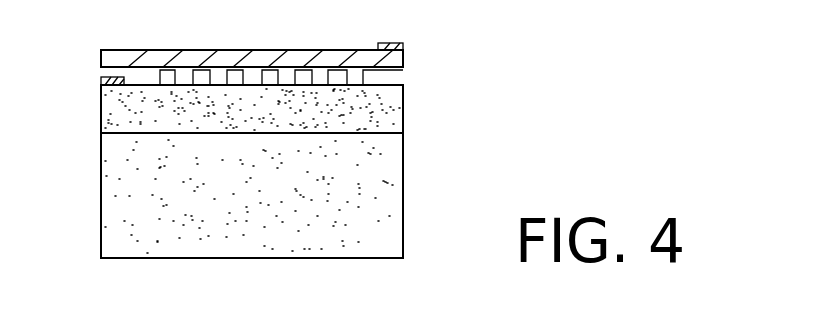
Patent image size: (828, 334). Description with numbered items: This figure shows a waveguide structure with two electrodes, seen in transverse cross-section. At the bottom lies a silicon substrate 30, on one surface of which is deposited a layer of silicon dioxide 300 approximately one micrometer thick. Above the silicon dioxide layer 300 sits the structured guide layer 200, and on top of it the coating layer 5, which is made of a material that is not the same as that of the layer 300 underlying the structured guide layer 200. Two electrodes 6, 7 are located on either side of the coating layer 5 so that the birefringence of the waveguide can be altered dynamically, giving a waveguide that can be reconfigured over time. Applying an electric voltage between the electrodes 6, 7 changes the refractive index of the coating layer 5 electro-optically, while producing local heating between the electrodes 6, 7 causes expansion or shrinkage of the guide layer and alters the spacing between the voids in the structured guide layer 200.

The coating layer 5 is at (405, 62).
The electrode 6 is at (102, 82).
The electrode 7 is at (405, 49).
The silicon substrate 30 is at (390, 168).
The structured guide layer 200 is at (403, 78).
The layer of silicon dioxide 300 is at (403, 120).